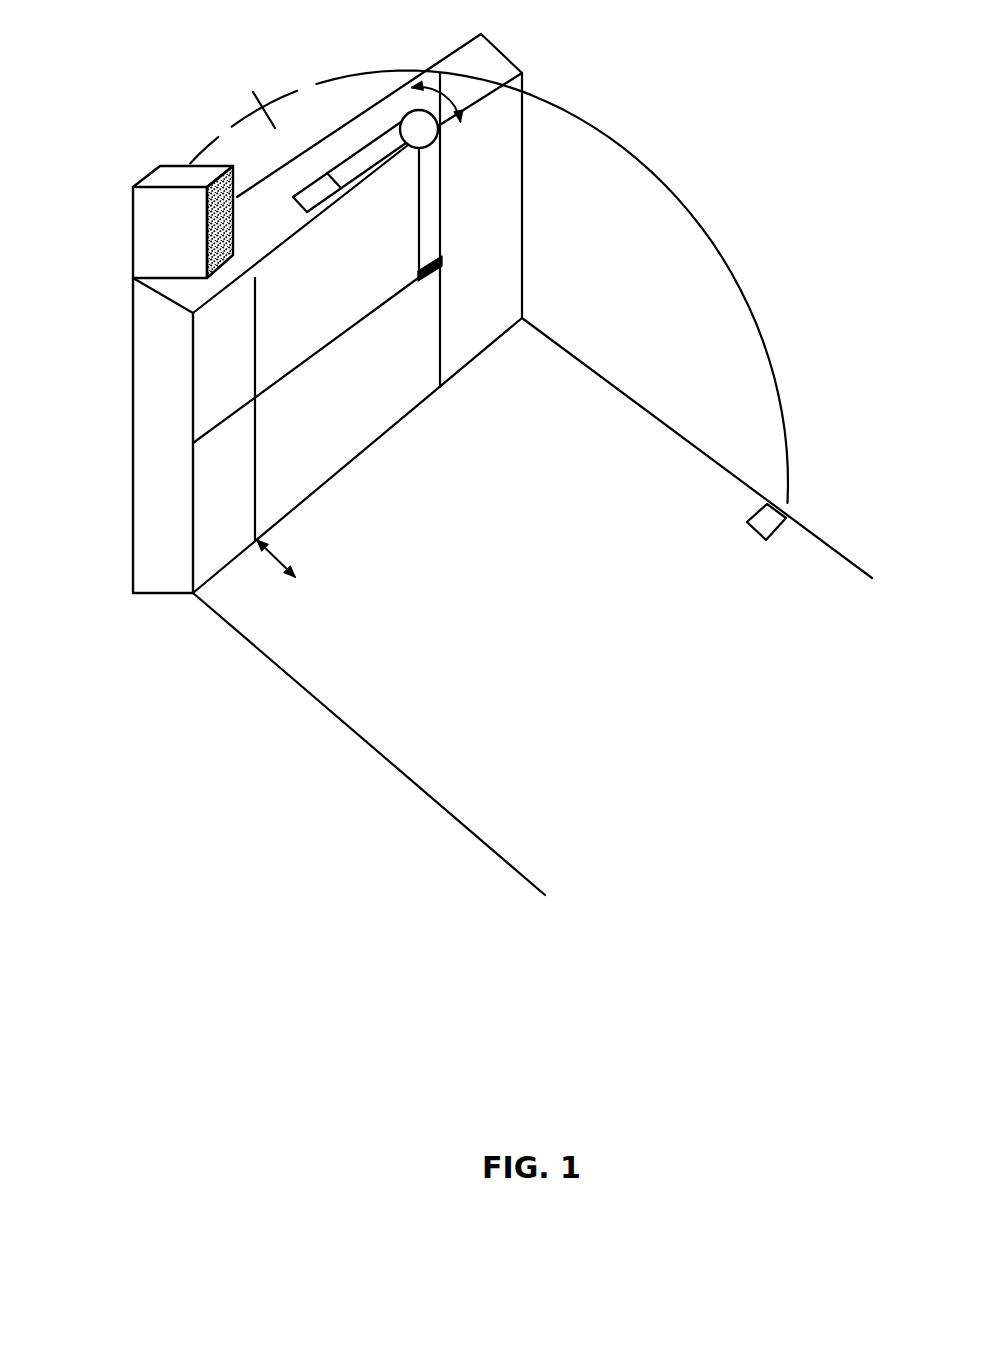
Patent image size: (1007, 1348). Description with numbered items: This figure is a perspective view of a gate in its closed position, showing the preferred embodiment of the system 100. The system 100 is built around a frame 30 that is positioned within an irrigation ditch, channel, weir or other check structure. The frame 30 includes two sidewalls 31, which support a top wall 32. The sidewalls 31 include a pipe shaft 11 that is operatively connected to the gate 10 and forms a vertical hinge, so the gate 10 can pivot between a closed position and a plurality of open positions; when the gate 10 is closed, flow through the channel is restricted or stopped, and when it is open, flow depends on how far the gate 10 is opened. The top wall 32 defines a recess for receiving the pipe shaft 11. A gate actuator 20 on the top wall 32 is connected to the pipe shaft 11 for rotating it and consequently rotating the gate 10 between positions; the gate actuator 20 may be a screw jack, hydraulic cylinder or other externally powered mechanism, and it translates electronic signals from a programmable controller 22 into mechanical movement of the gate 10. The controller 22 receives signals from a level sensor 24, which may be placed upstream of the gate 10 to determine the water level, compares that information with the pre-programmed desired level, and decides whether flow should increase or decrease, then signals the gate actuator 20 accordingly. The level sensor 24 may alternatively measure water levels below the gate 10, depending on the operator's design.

The system 100 is at (287, 77).
The gate 10 is at (363, 420).
The pipe shaft 11 is at (428, 202).
The gate actuator 20 is at (350, 110).
The programmable controller 22 is at (135, 213).
The level sensor 24 is at (772, 520).
The frame 30 is at (510, 128).
The sidewalls 31 is at (498, 211).
The top wall 32 is at (274, 227).